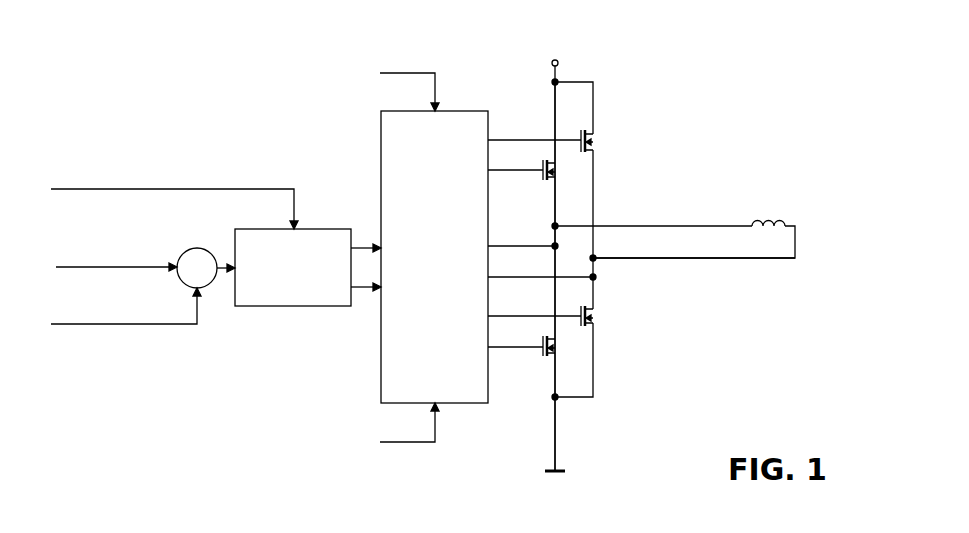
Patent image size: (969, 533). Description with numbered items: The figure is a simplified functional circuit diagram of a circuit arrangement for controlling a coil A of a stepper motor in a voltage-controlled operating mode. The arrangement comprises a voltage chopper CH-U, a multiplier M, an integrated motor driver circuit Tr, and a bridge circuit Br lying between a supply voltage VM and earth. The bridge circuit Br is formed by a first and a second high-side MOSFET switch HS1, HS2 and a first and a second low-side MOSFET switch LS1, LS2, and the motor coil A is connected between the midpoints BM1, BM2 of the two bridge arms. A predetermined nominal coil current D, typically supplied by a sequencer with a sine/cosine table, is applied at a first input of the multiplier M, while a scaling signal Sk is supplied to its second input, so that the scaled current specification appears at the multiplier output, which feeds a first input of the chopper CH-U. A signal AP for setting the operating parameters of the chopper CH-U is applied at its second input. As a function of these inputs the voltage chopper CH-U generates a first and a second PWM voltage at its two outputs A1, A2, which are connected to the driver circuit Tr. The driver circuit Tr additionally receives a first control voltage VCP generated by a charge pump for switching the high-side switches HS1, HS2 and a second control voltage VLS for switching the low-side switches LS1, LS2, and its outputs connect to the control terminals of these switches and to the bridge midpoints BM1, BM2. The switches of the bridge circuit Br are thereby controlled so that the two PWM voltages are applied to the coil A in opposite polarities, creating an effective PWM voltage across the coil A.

The operating parameter signal AP is at (174, 195).
The nominal coil current D is at (116, 255).
The scaling signal Sk is at (126, 307).
The multiplier M is at (206, 255).
The voltage chopper CH-U is at (293, 267).
The first chopper output A1 is at (366, 236).
The second chopper output A2 is at (366, 277).
The motor driver circuit Tr is at (434, 257).
The first control voltage VCP is at (382, 82).
The second control voltage VLS is at (382, 430).
The supply voltage VM is at (564, 79).
The first high-side MOSFET switch HS1 is at (521, 165).
The second high-side MOSFET switch HS2 is at (562, 167).
The first low-side MOSFET switch LS1 is at (521, 341).
The second low-side MOSFET switch LS2 is at (560, 313).
The first bridge midpoint BM1 is at (523, 237).
The second bridge midpoint BM2 is at (542, 268).
The motor coil A is at (694, 224).
The bridge circuit Br is at (622, 183).